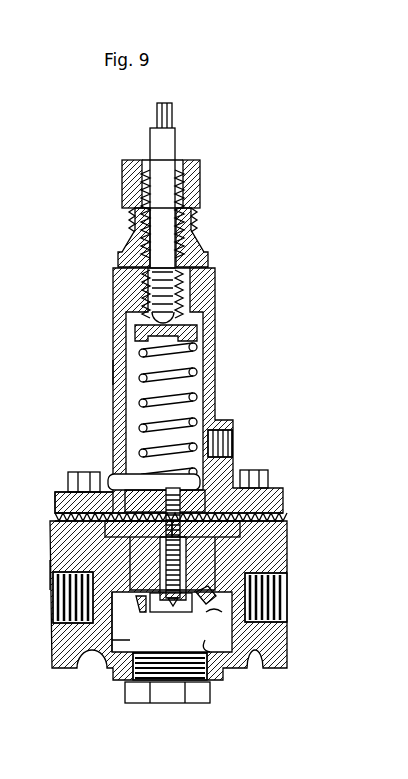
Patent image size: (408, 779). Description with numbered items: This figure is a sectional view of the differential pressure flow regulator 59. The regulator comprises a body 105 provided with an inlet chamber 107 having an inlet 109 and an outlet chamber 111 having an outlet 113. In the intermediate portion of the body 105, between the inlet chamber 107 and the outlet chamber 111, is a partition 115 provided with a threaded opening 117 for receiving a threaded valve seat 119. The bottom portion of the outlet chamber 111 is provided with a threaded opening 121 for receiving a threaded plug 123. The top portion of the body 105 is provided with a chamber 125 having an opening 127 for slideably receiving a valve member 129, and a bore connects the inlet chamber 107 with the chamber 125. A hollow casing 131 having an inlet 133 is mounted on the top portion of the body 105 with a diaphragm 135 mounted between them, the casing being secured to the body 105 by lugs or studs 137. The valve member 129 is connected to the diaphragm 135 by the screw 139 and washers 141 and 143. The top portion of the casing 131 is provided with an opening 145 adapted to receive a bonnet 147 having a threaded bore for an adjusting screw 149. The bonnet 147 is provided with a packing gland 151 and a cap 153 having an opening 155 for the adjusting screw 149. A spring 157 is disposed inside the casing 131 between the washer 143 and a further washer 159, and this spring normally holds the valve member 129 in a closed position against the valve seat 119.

The differential pressure flow regulator 59 is at (105, 311).
The body 105 is at (56, 558).
The inlet chamber 107 is at (140, 592).
The inlet 109 is at (56, 610).
The outlet chamber 111 is at (222, 624).
The outlet 113 is at (288, 605).
The partition 115 is at (146, 612).
The threaded opening 117 is at (206, 604).
The threaded valve seat 119 is at (209, 646).
The threaded opening 121 is at (170, 658).
The threaded plug 123 is at (155, 703).
The chamber 125 is at (60, 528).
The opening 127 is at (142, 574).
The valve member 129 is at (171, 603).
The hollow casing 131 is at (120, 372).
The inlet 133 is at (232, 444).
The diaphragm 135 is at (63, 512).
The lugs or studs 137 is at (72, 472).
The screw 139 is at (176, 490).
The washer 141 is at (283, 530).
The washer 143 is at (64, 493).
The opening 145 is at (200, 288).
The bonnet 147 is at (136, 240).
The adjusting screw 149 is at (150, 136).
The packing gland 151 is at (135, 220).
The cap 153 is at (122, 185).
The opening 155 is at (178, 165).
The spring 157 is at (138, 386).
The washer 159 is at (140, 330).